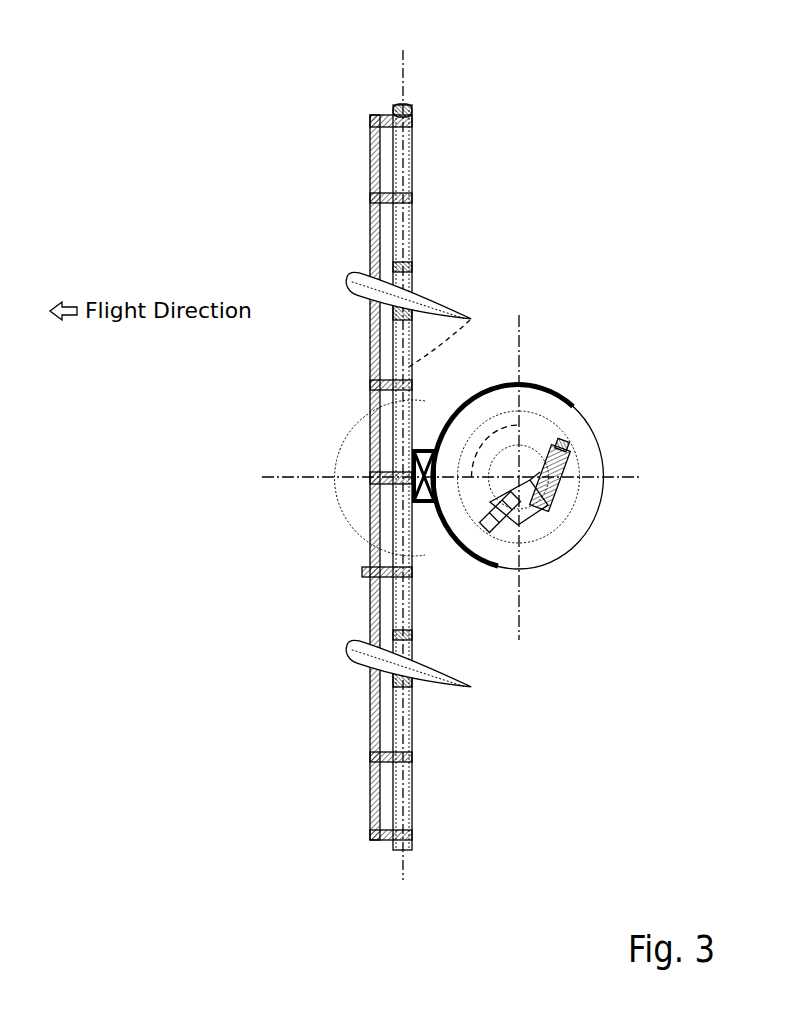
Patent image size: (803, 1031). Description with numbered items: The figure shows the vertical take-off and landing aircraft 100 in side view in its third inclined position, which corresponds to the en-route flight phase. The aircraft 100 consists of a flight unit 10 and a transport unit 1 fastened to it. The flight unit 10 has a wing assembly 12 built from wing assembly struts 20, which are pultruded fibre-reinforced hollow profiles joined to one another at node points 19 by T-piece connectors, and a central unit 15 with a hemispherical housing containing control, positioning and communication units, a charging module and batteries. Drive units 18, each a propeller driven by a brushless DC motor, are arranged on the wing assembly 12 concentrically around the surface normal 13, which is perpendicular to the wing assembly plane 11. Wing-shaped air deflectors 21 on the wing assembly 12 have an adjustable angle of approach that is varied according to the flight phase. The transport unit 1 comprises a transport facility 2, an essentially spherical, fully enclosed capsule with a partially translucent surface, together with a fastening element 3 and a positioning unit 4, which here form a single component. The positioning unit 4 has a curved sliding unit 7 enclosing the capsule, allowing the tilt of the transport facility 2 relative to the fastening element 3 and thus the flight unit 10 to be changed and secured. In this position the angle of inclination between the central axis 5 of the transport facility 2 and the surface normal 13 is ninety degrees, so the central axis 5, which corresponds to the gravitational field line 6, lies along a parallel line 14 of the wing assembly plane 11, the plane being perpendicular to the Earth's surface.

The aircraft 100 is at (166, 123).
The flight unit 10 is at (290, 665).
The wing assembly plane 11 is at (405, 62).
The wing assembly 12 is at (456, 477).
The wing assembly struts 20 is at (410, 160).
The drive units 18 is at (378, 197).
The node points 19 is at (412, 113).
The air deflectors 21 is at (352, 277).
The central unit 15 is at (340, 430).
The surface normal 13 is at (295, 480).
The fastening element 3 is at (443, 542).
The positioning unit 4 is at (415, 502).
The transport unit 1 is at (632, 415).
The transport facility 2 is at (585, 528).
The central axis 5 is at (592, 508).
The gravitational field line 6 is at (592, 508).
The parallel line 14 is at (527, 625).
The sliding unit 7 is at (535, 382).